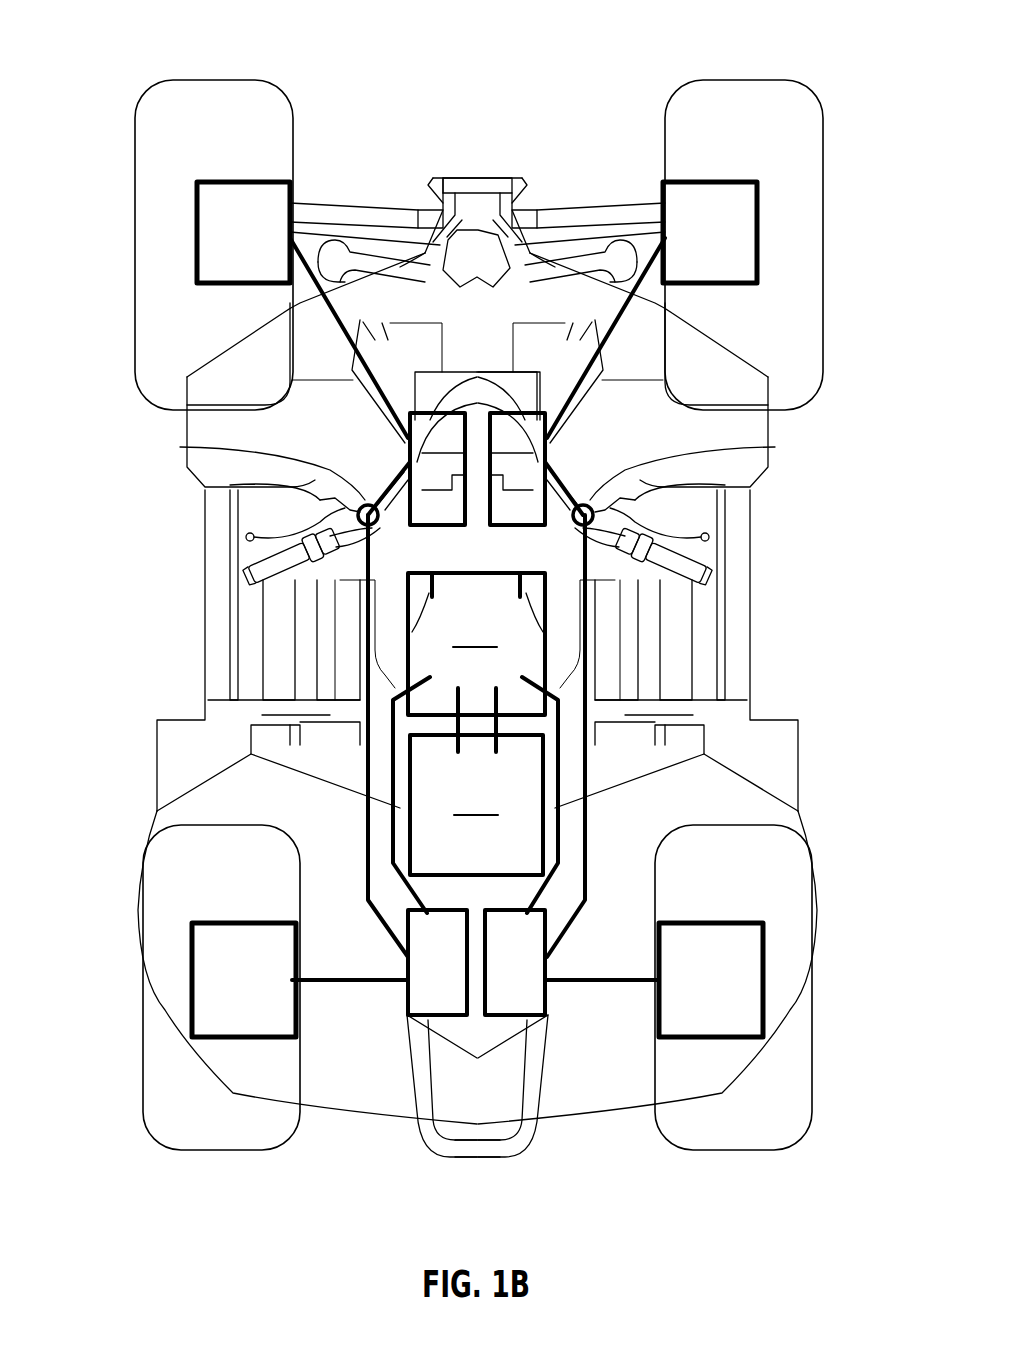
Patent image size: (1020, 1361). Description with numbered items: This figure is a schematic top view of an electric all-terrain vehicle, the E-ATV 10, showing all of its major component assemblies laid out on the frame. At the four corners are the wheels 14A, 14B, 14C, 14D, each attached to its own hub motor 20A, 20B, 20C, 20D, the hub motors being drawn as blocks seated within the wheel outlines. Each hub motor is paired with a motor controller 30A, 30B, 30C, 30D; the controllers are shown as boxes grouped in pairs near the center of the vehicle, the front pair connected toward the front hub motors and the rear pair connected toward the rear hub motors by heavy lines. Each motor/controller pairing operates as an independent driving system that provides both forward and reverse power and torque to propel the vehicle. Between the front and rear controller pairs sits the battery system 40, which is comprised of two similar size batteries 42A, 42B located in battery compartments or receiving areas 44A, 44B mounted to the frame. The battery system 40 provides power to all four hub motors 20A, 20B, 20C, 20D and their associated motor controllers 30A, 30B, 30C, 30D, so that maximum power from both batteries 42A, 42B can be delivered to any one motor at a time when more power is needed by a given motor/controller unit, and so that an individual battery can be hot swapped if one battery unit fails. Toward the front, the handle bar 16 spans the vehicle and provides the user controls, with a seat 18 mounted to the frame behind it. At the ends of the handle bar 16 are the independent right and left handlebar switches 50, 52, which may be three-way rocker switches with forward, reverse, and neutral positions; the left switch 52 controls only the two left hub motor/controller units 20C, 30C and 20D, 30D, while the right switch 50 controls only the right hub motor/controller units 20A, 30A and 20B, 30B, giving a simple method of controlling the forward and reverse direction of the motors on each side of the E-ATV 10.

The E-ATV 10 is at (512, 66).
The wheel 14A is at (757, 118).
The wheel 14B is at (805, 1100).
The wheel 14C is at (198, 118).
The wheel 14D is at (150, 1082).
The handle bar 16 is at (474, 396).
The seat 18 is at (395, 690).
The hub motor 20A is at (757, 240).
The hub motor 20B is at (762, 955).
The hub motor 20C is at (197, 240).
The hub motor 20D is at (190, 945).
The motor controller 30A is at (537, 420).
The motor controller 30B is at (500, 1018).
The motor controller 30C is at (430, 425).
The motor controller 30D is at (443, 1018).
The battery system 40 is at (627, 719).
The battery 42A is at (555, 607).
The battery 42B is at (560, 762).
The battery compartment 44A is at (617, 639).
The battery compartment 44B is at (628, 784).
The right handlebar switch 50 is at (592, 508).
The left handlebar switch 52 is at (362, 508).